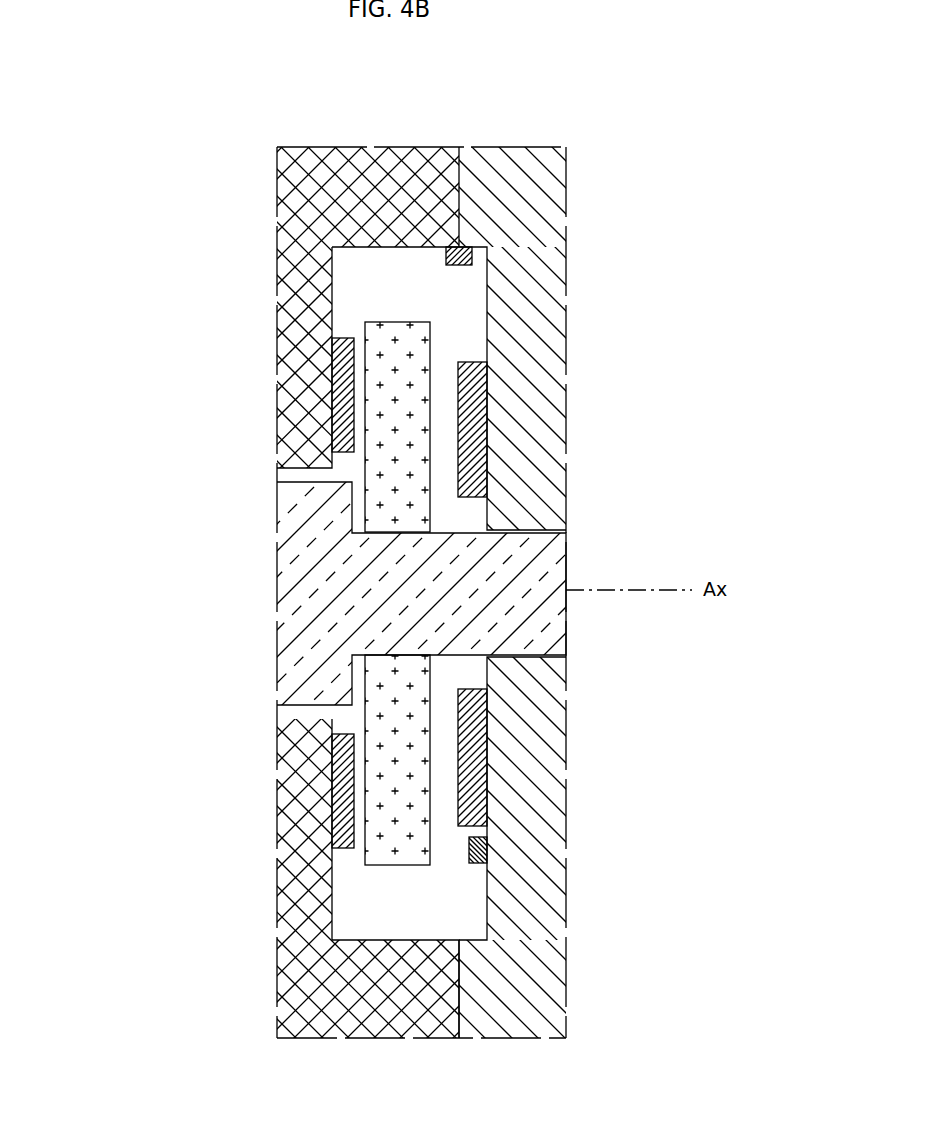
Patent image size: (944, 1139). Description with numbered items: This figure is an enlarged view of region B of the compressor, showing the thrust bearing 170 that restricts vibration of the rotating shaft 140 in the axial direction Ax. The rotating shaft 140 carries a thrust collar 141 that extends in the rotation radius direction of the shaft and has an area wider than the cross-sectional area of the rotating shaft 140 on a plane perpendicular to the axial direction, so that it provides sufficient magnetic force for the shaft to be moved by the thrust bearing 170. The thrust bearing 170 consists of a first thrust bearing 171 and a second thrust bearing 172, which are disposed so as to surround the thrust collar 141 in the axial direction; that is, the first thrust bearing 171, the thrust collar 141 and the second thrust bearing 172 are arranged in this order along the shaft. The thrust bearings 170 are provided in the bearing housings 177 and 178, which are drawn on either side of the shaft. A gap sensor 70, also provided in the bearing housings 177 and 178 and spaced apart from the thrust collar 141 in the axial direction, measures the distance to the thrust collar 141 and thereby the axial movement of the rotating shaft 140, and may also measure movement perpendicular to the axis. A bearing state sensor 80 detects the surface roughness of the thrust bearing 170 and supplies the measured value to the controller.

The gap sensor 70 is at (488, 847).
The bearing state sensor 80 is at (472, 253).
The rotating shaft 140 is at (295, 603).
The thrust collar 141 is at (422, 350).
The thrust bearing 170 is at (392, 624).
The first thrust bearing 171 is at (335, 399).
The second thrust bearing 172 is at (470, 456).
The bearing housing 177 is at (388, 1010).
The bearing housing 178 is at (525, 1010).
The region B is at (482, 147).